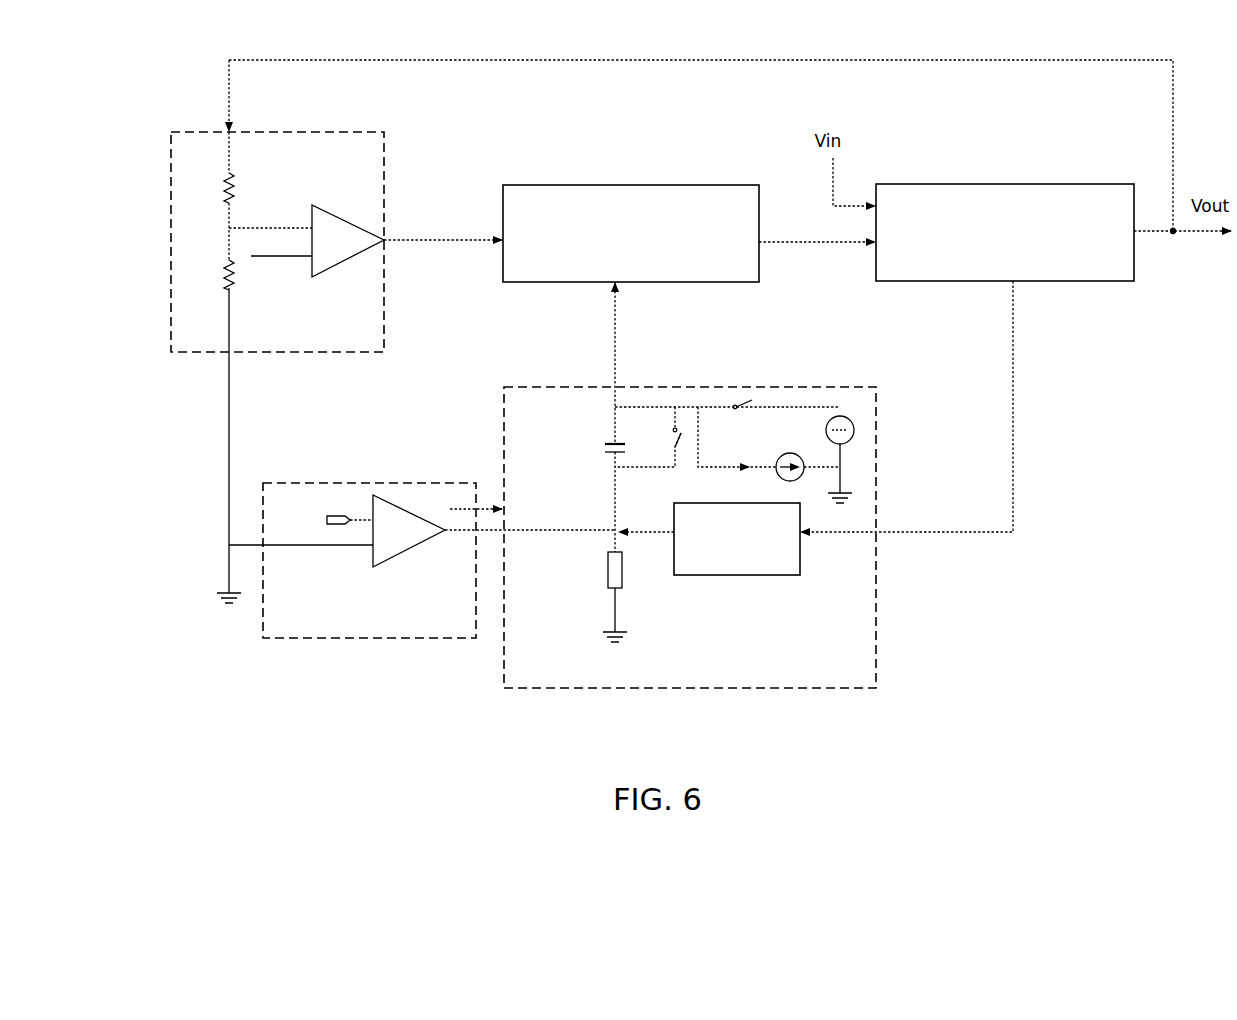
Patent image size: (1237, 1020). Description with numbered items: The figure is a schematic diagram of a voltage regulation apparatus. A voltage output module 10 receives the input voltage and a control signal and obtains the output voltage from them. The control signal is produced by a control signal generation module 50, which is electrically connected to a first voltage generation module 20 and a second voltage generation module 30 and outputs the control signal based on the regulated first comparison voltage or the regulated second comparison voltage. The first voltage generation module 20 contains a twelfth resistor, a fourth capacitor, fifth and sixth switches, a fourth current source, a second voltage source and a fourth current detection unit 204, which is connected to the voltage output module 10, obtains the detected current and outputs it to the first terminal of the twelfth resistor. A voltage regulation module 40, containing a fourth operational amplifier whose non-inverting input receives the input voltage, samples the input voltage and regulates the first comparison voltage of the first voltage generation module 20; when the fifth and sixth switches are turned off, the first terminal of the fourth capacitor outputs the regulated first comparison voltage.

The voltage output module 10 is at (1053, 184).
The first voltage generation module 20 is at (690, 517).
The second voltage generation module 30 is at (350, 137).
The voltage regulation module 40 is at (333, 483).
The control signal generation module 50 is at (682, 185).
The fourth current detection unit 204 is at (792, 574).